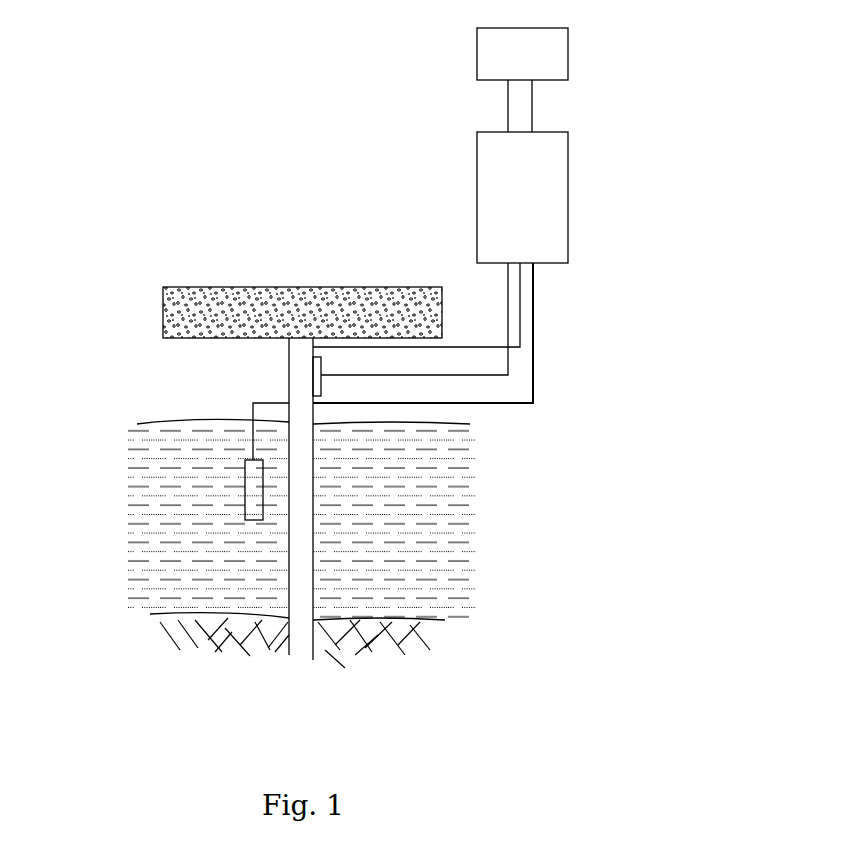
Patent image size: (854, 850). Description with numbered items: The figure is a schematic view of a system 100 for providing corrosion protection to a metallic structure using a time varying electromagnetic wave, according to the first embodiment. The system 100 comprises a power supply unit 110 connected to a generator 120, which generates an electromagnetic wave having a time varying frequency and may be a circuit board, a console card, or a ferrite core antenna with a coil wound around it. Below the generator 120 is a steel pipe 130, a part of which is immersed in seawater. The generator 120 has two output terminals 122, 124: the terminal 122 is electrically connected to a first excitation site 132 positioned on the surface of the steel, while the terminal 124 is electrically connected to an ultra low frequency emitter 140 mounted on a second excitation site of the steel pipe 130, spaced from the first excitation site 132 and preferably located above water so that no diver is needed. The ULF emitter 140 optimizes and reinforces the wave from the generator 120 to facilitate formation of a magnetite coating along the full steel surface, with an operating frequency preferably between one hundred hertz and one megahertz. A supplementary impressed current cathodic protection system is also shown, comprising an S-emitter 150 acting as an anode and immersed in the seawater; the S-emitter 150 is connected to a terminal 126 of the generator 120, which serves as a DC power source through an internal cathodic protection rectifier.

The system 100 is at (608, 408).
The power supply unit 110 is at (546, 55).
The generator 120 is at (558, 212).
The output terminal 122 is at (522, 263).
The output terminal 124 is at (507, 263).
The terminal 126 is at (535, 263).
The steel pipe 130 is at (302, 554).
The first excitation site 132 is at (313, 346).
The ultra low frequency (ULF) emitter 140 is at (317, 380).
The S-emitter 150 is at (257, 500).